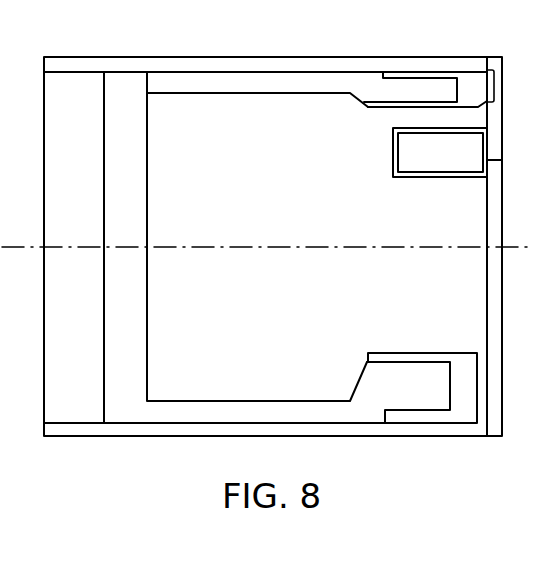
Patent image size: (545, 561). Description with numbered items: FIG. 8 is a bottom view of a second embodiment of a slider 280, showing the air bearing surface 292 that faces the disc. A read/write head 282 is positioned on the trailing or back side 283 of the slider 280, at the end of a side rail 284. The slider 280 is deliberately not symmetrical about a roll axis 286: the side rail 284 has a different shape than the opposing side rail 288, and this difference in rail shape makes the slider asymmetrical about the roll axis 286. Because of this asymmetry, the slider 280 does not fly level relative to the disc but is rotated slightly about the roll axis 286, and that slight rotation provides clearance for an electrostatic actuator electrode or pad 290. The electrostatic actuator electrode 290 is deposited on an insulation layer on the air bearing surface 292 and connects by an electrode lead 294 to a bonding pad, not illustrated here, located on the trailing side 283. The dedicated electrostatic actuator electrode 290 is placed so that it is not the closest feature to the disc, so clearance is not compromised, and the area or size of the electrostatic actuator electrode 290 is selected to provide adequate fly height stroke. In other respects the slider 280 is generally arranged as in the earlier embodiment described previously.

The slider 280 is at (138, 470).
The read/write head 282 is at (491, 70).
The trailing side 283 is at (487, 301).
The side rail 284 is at (402, 72).
The roll axis 286 is at (315, 247).
The side rail 288 is at (390, 423).
The electrostatic actuator electrode 290 is at (424, 152).
The air bearing surface 292 is at (393, 165).
The electrode lead 294 is at (494, 163).